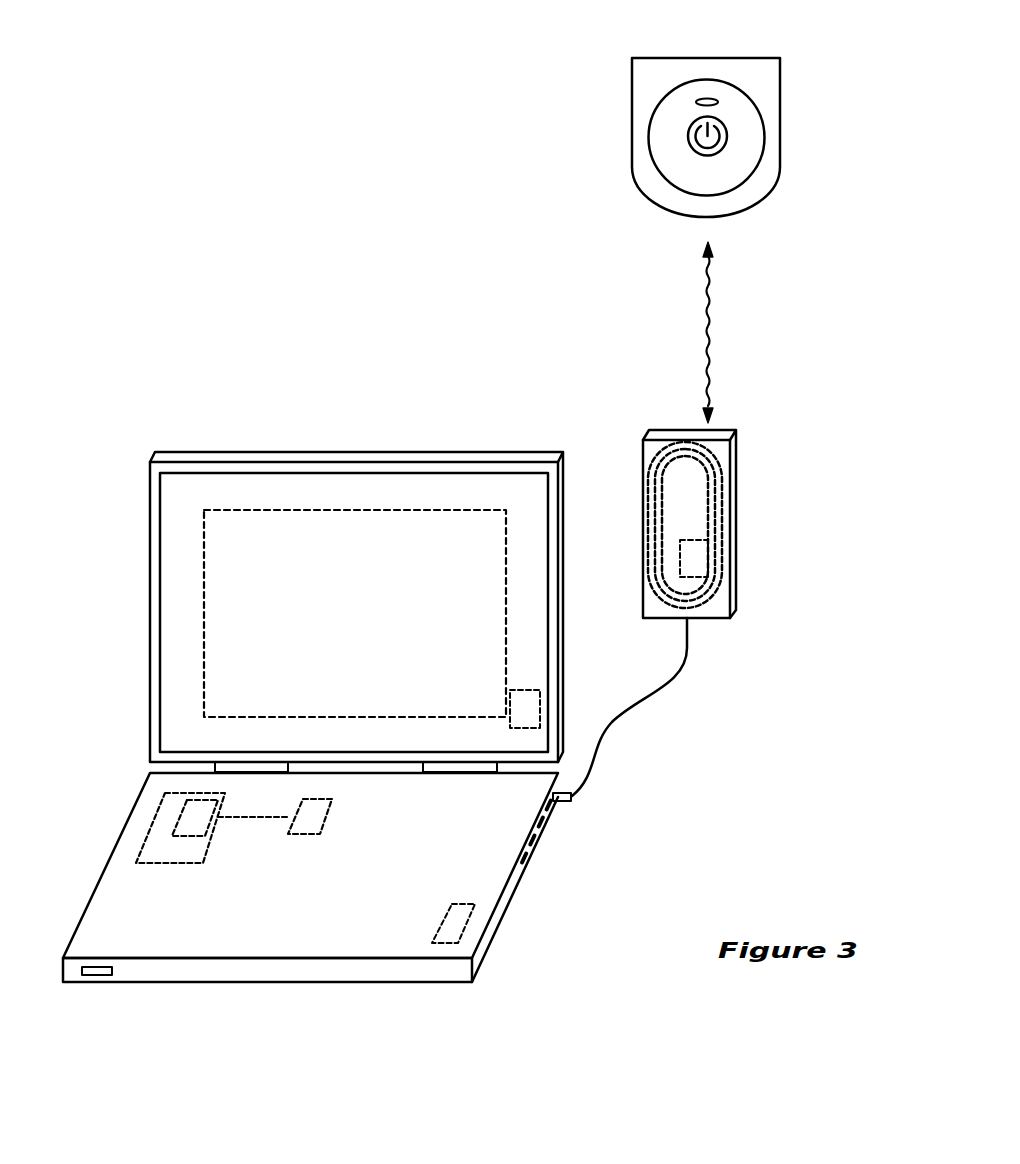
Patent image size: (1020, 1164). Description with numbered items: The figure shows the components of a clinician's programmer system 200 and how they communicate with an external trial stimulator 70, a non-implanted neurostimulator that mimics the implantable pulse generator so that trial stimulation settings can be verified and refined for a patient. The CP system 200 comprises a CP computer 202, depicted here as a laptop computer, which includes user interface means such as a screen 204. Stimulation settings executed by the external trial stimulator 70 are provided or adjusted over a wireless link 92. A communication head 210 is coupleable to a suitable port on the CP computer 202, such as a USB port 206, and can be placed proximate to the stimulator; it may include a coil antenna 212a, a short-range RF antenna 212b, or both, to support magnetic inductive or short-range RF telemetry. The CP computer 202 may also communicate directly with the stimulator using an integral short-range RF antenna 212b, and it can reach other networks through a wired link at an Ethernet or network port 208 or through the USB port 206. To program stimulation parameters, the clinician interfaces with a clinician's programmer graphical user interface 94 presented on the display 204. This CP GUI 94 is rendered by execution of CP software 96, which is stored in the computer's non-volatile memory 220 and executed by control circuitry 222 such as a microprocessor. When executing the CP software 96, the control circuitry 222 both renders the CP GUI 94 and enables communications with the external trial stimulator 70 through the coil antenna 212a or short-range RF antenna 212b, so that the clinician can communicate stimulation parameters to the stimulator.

The external trial stimulator 70 is at (632, 104).
The wireless link 92 is at (712, 342).
The clinician's programmer graphical user interface 94 is at (412, 512).
The CP software 96 is at (197, 818).
The clinician's programmer system 200 is at (335, 348).
The CP computer 202 is at (310, 905).
The screen 204 is at (323, 612).
The USB port 206 is at (550, 836).
The Ethernet or network port 208 is at (97, 967).
The communication head 210 is at (638, 489).
The coil antenna 212a is at (654, 468).
The short-range RF antenna 212b is at (697, 538).
The non-volatile memory 220 is at (170, 858).
The control circuitry 222 is at (330, 819).